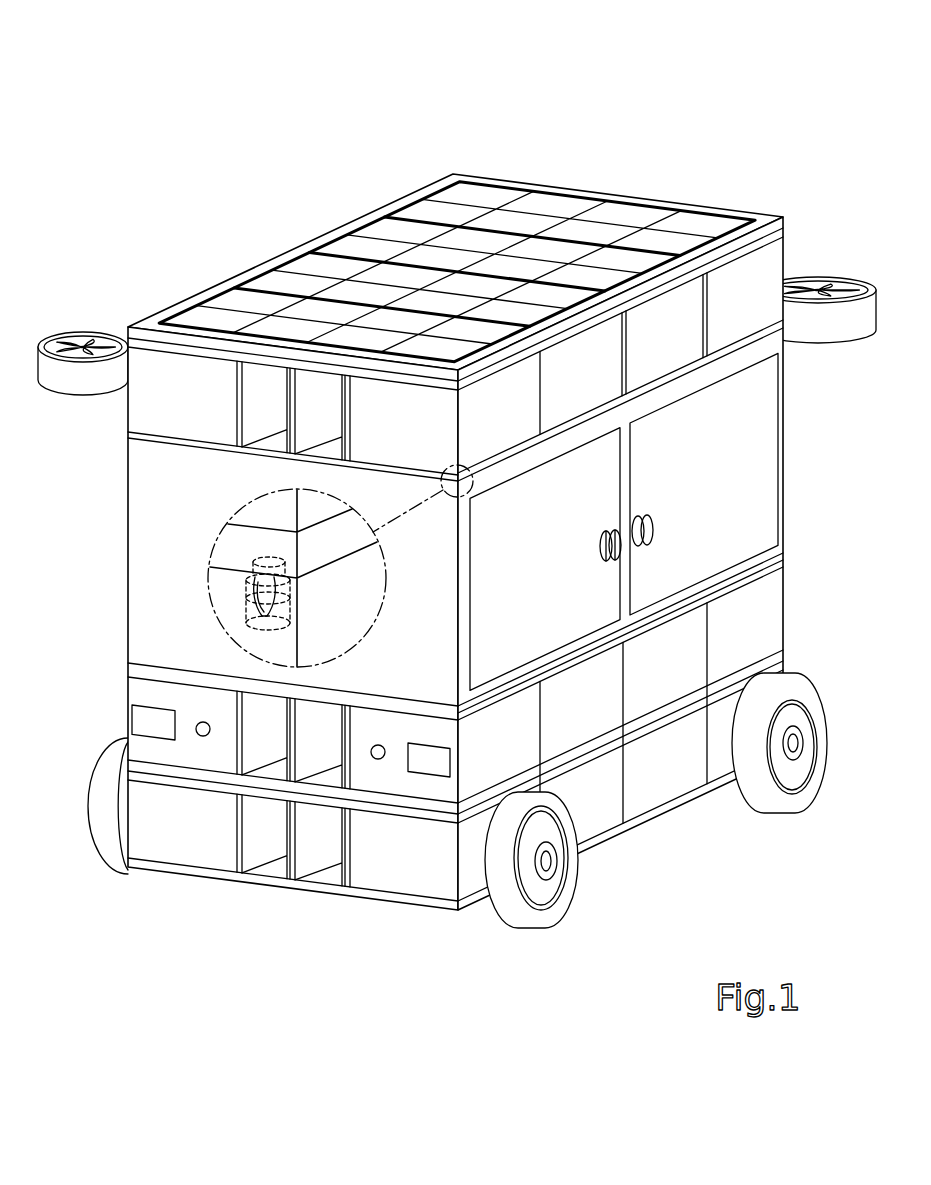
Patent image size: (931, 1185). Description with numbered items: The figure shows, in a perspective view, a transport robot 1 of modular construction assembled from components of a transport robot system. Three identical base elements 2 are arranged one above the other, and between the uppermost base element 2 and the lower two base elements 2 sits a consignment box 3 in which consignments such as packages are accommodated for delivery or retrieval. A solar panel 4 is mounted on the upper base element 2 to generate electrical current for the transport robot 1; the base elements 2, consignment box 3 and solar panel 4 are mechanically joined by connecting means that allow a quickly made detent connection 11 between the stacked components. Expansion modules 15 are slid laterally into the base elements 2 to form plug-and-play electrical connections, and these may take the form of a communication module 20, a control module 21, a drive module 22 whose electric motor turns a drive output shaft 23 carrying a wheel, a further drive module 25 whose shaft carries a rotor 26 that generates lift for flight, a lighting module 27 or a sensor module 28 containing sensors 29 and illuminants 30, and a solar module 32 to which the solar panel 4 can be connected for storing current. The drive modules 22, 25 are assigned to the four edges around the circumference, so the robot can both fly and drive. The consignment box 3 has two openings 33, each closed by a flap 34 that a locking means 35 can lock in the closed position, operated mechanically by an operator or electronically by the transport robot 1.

The transport robot 1 is at (446, 460).
The base element 2 is at (262, 387).
The consignment box 3 is at (148, 519).
The solar panel 4 is at (479, 205).
The detent connection 11 is at (229, 596).
The expansion module 15 is at (668, 685).
The communication module 20 is at (768, 613).
The control module 21 is at (658, 788).
The drive module 22 is at (152, 842).
The drive output shaft 23 is at (750, 297).
The drive module 25 is at (752, 268).
The rotor 26 is at (83, 380).
The lighting module 27 is at (183, 752).
The sensor module 28 is at (395, 780).
The sensor 29 is at (140, 722).
The illuminant 30 is at (203, 735).
The solar module 32 is at (563, 205).
The opening 33 is at (783, 566).
The flap 34 is at (697, 486).
The locking means 35 is at (652, 530).